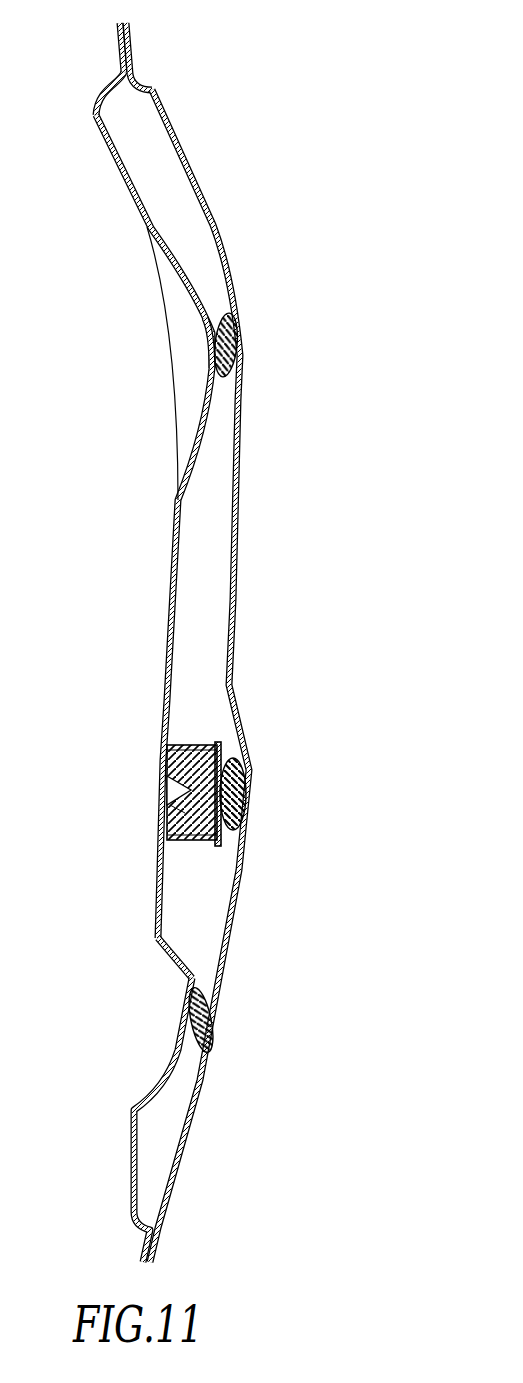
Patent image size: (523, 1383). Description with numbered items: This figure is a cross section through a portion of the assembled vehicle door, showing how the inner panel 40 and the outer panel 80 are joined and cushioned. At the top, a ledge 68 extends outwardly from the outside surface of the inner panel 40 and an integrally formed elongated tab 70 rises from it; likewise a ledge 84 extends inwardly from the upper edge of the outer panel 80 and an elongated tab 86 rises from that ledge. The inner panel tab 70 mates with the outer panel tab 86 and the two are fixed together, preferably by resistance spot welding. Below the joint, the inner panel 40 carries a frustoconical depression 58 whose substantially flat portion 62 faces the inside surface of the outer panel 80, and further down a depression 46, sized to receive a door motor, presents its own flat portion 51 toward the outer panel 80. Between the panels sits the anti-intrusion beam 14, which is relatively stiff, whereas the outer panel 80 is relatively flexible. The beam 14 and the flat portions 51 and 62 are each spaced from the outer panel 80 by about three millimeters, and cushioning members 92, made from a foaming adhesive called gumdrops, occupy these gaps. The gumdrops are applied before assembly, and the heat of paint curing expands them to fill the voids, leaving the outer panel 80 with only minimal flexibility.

The anti-intrusion beam 14 is at (192, 745).
The inner panel 40 is at (108, 160).
The depression 46 is at (187, 1020).
The flat portion 51 is at (200, 985).
The depression 58 is at (208, 379).
The flat portion 62 is at (217, 313).
The ledge 68 is at (118, 80).
The elongated tab 70 is at (117, 40).
The outer panel 80 is at (196, 154).
The ledge 84 is at (150, 82).
The elongated tab 86 is at (130, 36).
The cushioning member 92 is at (243, 383).